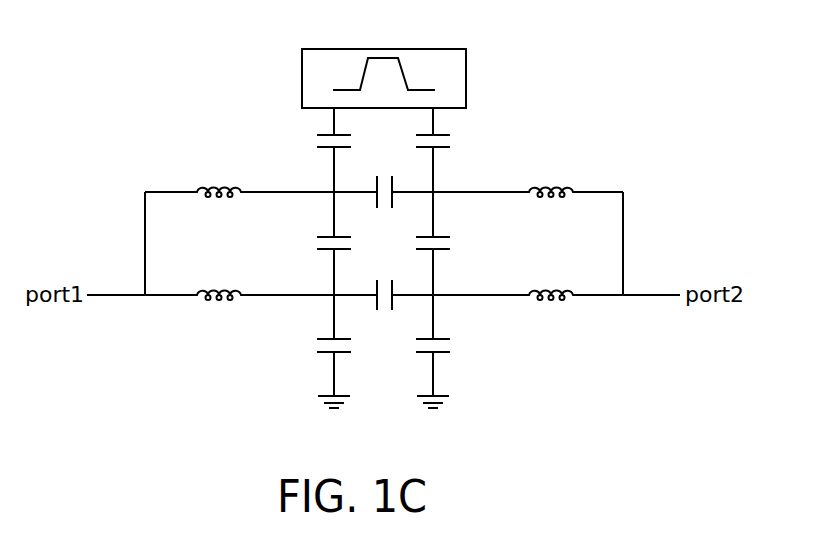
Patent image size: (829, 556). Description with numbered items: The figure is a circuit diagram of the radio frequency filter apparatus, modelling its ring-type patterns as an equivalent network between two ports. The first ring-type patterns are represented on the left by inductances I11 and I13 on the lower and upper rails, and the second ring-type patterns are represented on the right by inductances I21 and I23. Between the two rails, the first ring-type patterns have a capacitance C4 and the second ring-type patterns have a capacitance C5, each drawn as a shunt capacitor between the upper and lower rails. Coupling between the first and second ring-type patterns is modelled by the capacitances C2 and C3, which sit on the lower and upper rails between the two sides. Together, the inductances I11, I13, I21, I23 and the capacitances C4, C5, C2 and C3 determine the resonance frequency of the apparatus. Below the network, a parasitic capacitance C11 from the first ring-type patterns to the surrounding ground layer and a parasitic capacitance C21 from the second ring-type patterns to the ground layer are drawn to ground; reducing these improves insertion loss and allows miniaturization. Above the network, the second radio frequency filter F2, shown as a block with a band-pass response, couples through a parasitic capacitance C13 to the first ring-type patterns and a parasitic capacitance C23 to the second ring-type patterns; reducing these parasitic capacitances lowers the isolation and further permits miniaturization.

The second radio frequency filter F2 is at (466, 78).
The parasitic capacitance C13 is at (309, 150).
The parasitic capacitance C23 is at (458, 150).
The inductance I13 is at (218, 175).
The inductance I11 is at (218, 311).
The inductance I23 is at (550, 175).
The inductance I21 is at (550, 311).
The capacitance C3 is at (382, 206).
The capacitance C2 is at (382, 310).
The capacitance C4 is at (314, 243).
The capacitance C5 is at (451, 243).
The parasitic capacitance C11 is at (309, 351).
The parasitic capacitance C21 is at (459, 351).